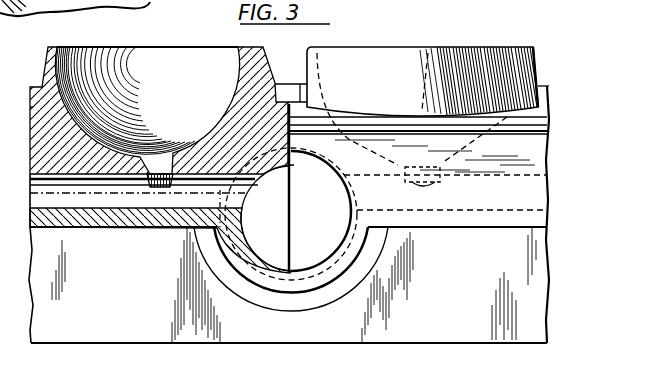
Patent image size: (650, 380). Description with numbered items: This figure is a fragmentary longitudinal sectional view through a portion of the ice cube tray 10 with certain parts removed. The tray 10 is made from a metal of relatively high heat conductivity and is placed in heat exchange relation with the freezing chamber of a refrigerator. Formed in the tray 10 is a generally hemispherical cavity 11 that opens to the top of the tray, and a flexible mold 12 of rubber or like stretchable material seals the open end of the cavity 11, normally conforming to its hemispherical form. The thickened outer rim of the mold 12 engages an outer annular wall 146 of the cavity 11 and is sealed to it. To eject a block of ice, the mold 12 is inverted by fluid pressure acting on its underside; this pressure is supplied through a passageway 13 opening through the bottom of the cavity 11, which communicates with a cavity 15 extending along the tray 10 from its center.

The tray 10 is at (549, 156).
The cavity 11 is at (254, 97).
The flexible mold 12 is at (425, 47).
The passageway 13 is at (163, 181).
The communicating cavity 15 is at (108, 196).
The outer annular wall 146 is at (277, 47).